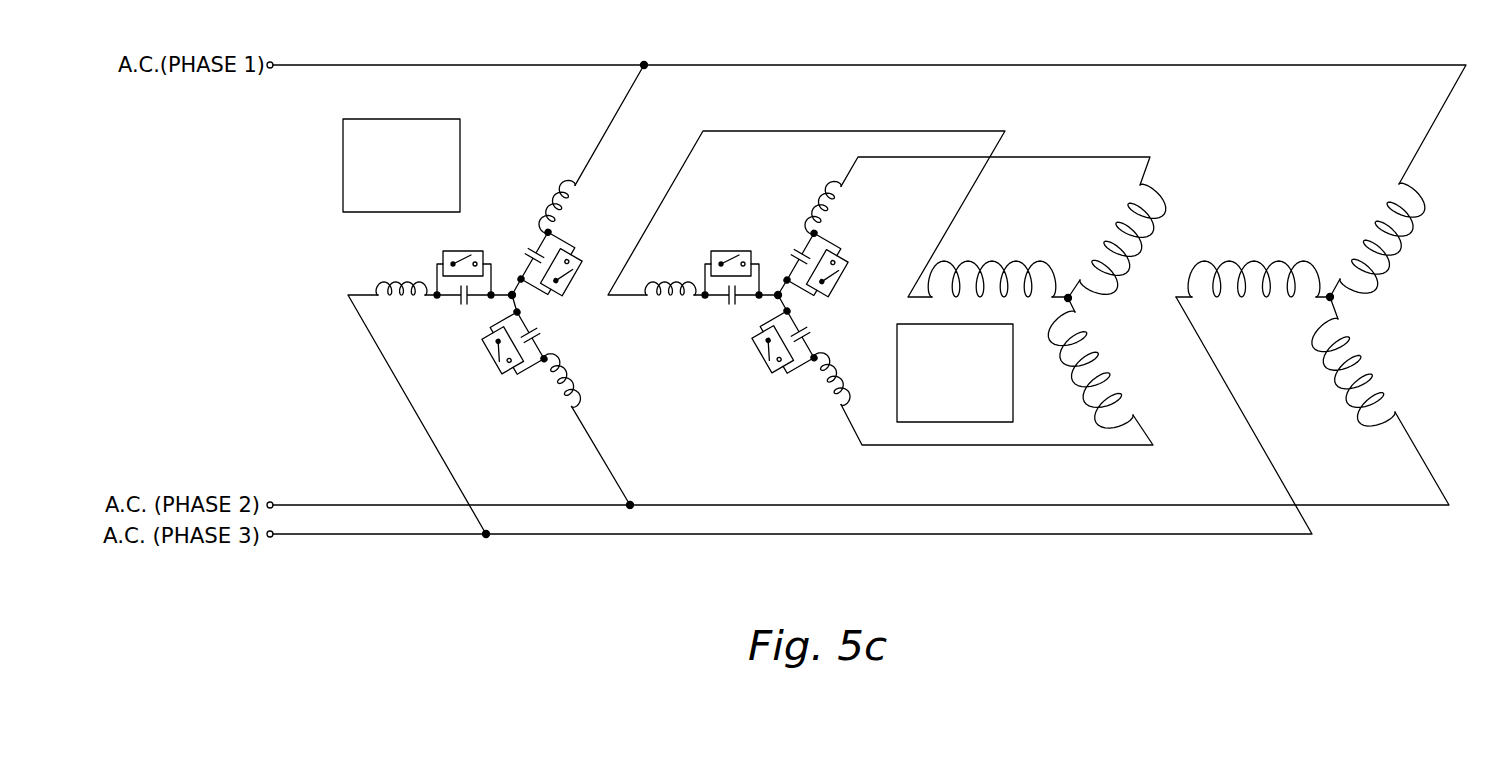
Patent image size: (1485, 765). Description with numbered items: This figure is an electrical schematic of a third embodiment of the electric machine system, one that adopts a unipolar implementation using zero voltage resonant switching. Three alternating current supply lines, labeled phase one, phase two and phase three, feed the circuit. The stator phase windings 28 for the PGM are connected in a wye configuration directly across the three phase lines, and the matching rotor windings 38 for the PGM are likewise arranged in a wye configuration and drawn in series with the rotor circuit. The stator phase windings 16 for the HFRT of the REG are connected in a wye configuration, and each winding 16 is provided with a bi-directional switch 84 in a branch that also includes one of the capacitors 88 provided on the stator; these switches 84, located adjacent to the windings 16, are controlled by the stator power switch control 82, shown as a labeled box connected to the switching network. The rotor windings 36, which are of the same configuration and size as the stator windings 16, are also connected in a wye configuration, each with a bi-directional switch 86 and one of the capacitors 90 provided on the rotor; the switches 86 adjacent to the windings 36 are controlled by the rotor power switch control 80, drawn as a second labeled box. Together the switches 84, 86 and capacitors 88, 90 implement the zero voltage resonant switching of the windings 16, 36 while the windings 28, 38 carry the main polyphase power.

The stator phase windings 16 is at (553, 210).
The stator phase windings 28 is at (1370, 295).
The rotor windings 36 is at (833, 198).
The rotor windings 38 is at (1107, 370).
The rotor power switch control 80 is at (1013, 412).
The stator power switch control 82 is at (376, 212).
The bi-directional switches 84 is at (491, 247).
The bi-directional switches 86 is at (753, 237).
The capacitors 88 is at (528, 252).
The capacitors 90 is at (802, 247).